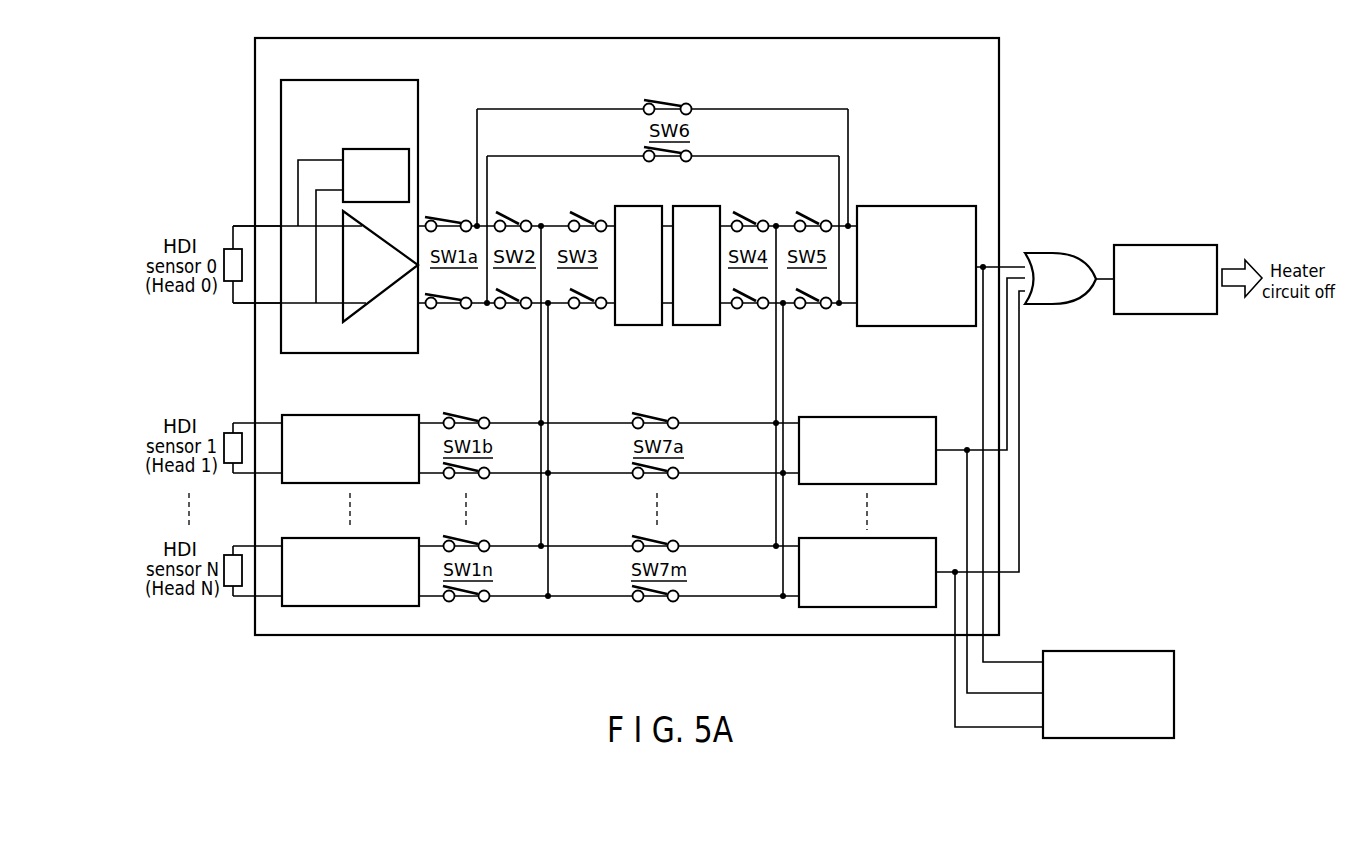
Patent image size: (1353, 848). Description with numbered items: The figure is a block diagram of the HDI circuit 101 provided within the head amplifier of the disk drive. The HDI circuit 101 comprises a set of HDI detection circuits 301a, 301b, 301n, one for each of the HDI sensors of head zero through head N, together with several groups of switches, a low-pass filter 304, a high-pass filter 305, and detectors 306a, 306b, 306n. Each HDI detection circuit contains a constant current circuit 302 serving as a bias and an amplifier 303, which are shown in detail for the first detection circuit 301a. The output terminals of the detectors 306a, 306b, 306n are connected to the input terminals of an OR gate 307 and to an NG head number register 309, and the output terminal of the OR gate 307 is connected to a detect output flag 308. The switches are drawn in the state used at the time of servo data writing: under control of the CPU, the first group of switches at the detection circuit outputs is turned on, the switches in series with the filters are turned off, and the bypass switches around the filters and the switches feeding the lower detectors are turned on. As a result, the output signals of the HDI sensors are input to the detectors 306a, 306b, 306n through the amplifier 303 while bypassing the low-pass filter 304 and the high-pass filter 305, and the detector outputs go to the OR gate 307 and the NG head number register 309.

The HDI circuit 101 is at (350, 38).
The HDI detection circuit 301a is at (325, 198).
The HDI detection circuit 301b is at (368, 415).
The HDI detection circuit 301n is at (368, 538).
The constant current circuit (BIAS) 302 is at (367, 148).
The amplifier (AMP) 303 is at (354, 315).
The low-pass filter (LPF) 304 is at (647, 196).
The high-pass filter (HPF) 305 is at (683, 206).
The detector 306a is at (898, 206).
The detector 306b is at (885, 417).
The detector 306n is at (885, 538).
The OR gate 307 is at (1052, 252).
The detect output flag 308 is at (1160, 245).
The NG head number register 309 is at (1112, 651).